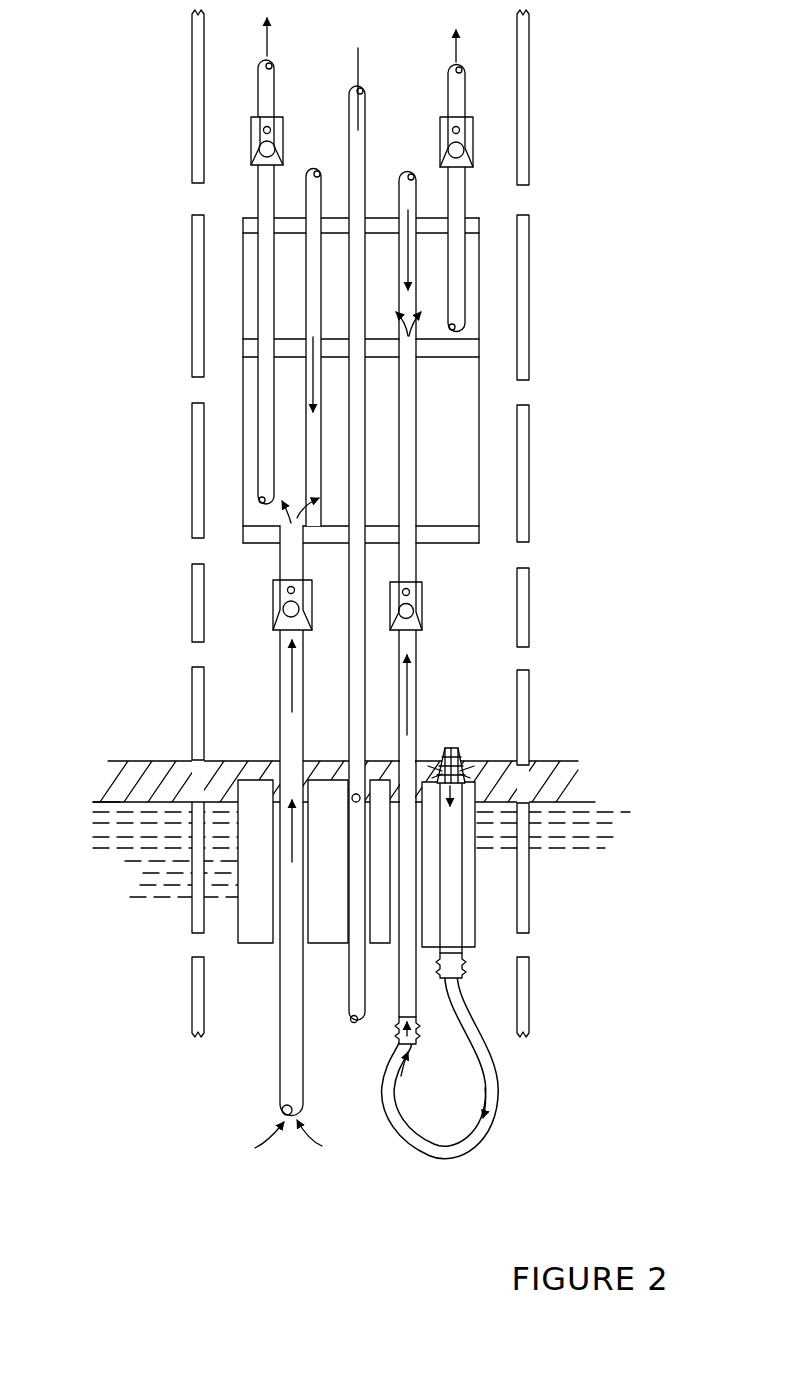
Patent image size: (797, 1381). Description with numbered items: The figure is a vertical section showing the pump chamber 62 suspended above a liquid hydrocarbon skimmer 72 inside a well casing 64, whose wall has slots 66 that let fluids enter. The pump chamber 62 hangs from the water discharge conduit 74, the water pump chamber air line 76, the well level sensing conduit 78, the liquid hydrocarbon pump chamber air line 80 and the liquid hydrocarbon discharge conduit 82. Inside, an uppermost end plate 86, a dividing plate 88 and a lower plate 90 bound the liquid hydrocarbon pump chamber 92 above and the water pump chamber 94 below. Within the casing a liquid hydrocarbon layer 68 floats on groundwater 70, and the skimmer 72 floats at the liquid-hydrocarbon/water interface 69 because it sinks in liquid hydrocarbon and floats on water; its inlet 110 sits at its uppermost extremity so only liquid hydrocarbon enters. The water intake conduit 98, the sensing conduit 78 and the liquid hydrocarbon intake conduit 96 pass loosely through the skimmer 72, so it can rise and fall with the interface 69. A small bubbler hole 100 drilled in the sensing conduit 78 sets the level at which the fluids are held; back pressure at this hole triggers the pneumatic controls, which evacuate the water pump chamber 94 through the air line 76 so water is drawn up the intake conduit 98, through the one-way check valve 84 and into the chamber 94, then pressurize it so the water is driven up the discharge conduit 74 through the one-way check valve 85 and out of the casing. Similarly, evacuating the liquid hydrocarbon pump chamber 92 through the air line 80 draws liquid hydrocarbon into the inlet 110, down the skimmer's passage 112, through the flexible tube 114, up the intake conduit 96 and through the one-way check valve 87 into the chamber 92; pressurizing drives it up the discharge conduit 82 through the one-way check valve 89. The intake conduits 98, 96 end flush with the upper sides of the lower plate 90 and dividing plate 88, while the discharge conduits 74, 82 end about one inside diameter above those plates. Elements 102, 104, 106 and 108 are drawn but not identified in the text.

The pump chamber 62 is at (241, 322).
The well casing 64 is at (189, 107).
The slots 66 is at (189, 196).
The liquid hydrocarbon layer 68 is at (126, 782).
The liquid-hydrocarbon/water interface 69 is at (90, 800).
The groundwater 70 is at (124, 858).
The liquid hydrocarbon skimmer 72 is at (254, 928).
The water discharge conduit 74 is at (281, 108).
The water pump chamber air line 76 is at (323, 191).
The well level sensing conduit 78 is at (370, 124).
The liquid hydrocarbon pump chamber air line 80 is at (398, 192).
The liquid hydrocarbon discharge conduit 82 is at (470, 110).
The one-way check valve 84 is at (271, 622).
The one-way check valve 85 is at (249, 146).
The uppermost end plate 86 is at (256, 221).
The one-way check valve 87 is at (425, 625).
The dividing plate 88 is at (472, 349).
The one-way check valve 89 is at (475, 165).
The lower plate 90 is at (473, 538).
The liquid hydrocarbon pump chamber 92 is at (397, 273).
The water pump chamber 94 is at (311, 400).
The liquid hydrocarbon intake conduit 96 is at (419, 463).
The water intake conduit 98 is at (296, 551).
The bubbler hole 100 is at (353, 786).
The annular passage 102 is at (275, 951).
The spacer block 104 is at (347, 946).
The spacer block 106 is at (392, 946).
The upper chamber wall 108 is at (482, 277).
The skimmer inlet 110 is at (466, 759).
The liquid hydrocarbon passage 112 is at (454, 919).
The flexible tube 114 is at (471, 1042).